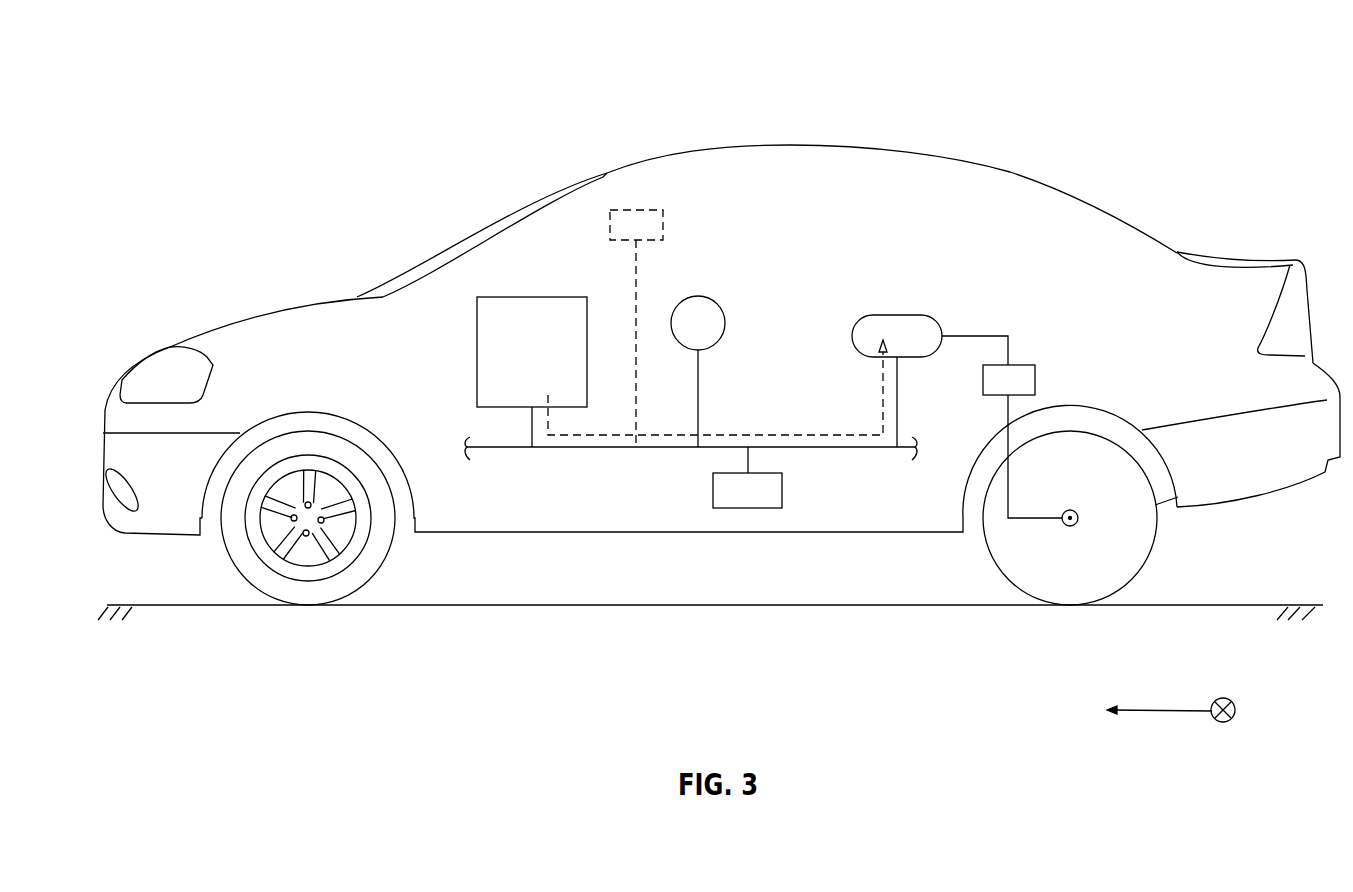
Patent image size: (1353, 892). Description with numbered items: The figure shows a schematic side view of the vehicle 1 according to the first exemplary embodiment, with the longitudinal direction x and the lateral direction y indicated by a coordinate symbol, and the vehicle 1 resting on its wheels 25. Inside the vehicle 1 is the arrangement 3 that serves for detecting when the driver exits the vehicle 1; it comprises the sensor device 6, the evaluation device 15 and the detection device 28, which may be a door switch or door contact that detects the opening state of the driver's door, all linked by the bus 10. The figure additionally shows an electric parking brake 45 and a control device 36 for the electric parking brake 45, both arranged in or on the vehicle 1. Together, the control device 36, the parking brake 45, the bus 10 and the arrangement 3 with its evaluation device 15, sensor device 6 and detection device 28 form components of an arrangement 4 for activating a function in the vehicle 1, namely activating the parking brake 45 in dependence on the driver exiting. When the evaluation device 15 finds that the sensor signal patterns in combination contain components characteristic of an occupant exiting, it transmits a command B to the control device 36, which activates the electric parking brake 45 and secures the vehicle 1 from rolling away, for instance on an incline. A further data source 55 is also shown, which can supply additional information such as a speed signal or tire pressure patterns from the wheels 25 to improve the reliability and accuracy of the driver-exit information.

The vehicle 1 is at (230, 135).
The arrangement 3 is at (817, 297).
The arrangement for activating or deactivating a function 4 is at (990, 318).
The sensor device 6 is at (782, 490).
The bus 10 is at (827, 449).
The evaluation device 15 is at (540, 296).
The wheel 25 is at (320, 588).
The detection device 28 is at (697, 297).
The control device 36 is at (897, 315).
The electric parking brake 45 is at (1035, 380).
The data source 55 is at (663, 225).
The command B is at (743, 435).
The longitudinal direction x is at (1130, 712).
The lateral direction y is at (1222, 722).